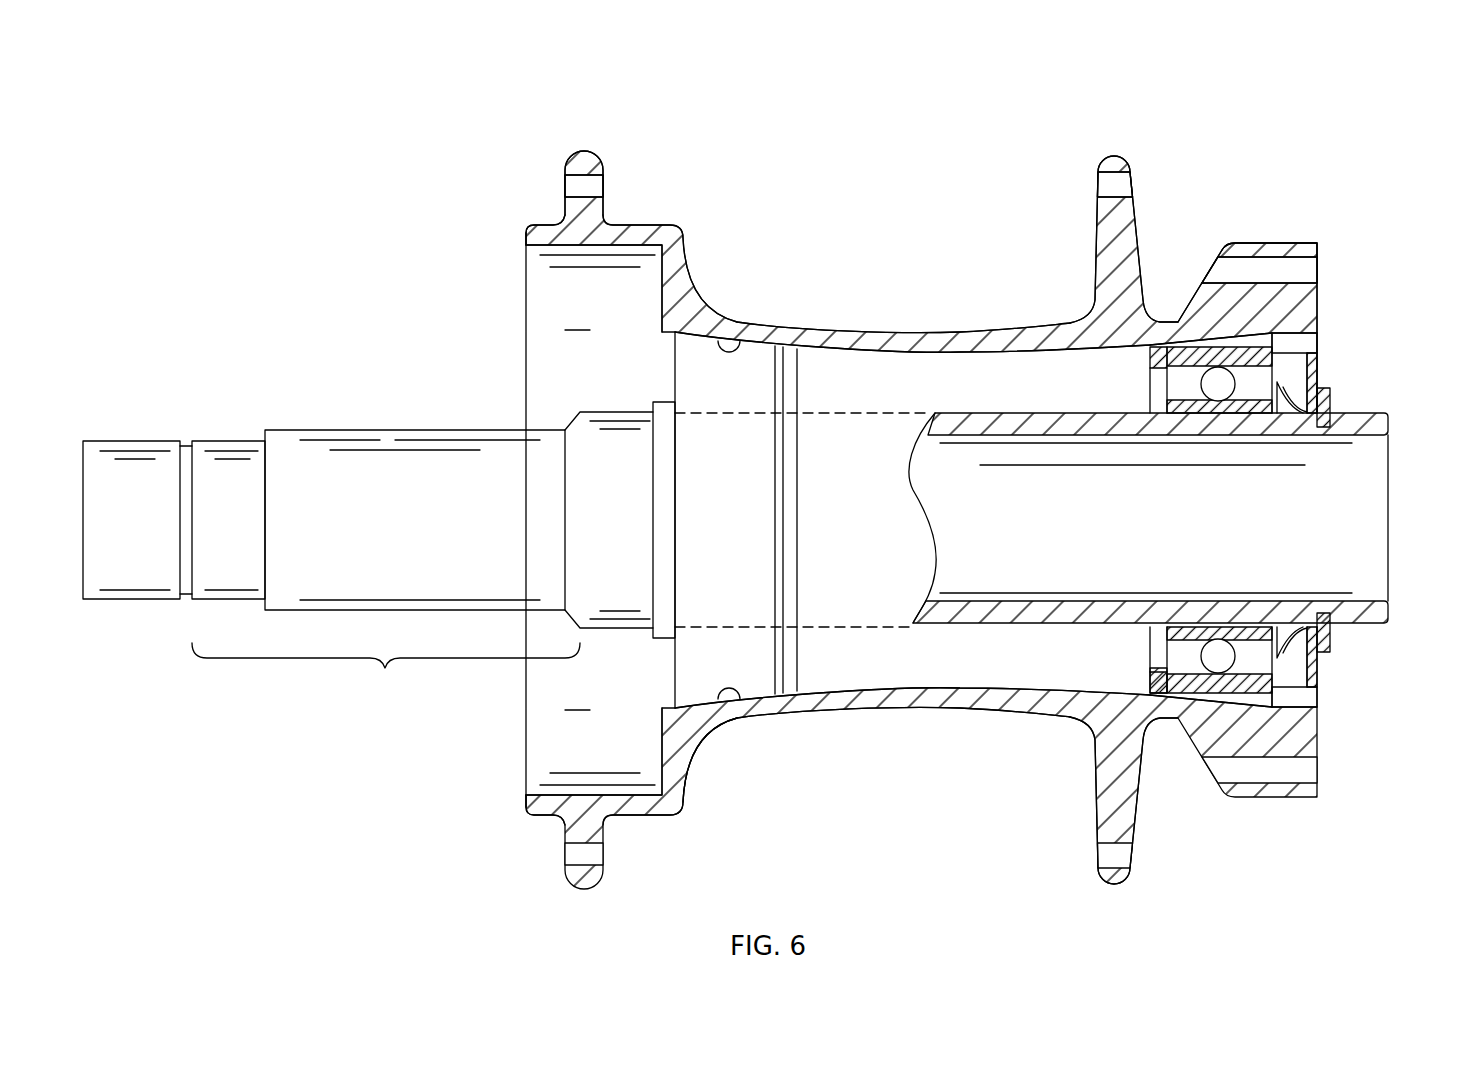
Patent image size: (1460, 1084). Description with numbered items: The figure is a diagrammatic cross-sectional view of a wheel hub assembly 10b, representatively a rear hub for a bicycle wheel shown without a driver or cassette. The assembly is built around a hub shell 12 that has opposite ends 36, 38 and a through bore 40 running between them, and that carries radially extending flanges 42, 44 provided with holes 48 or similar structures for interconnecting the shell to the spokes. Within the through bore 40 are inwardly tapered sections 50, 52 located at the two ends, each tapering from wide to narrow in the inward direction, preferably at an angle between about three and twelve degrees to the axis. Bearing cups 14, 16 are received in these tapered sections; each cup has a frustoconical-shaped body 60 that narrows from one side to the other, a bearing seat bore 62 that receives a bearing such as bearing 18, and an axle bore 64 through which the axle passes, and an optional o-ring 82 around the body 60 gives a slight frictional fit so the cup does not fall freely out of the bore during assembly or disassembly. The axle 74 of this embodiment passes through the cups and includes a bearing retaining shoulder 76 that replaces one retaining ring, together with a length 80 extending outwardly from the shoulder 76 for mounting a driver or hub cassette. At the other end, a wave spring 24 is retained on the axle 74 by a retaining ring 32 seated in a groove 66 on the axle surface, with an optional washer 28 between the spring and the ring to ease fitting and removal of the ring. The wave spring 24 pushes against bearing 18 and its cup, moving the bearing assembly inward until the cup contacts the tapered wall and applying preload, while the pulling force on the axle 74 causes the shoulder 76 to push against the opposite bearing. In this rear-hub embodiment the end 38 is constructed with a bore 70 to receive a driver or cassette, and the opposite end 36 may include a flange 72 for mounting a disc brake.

The wheel hub assembly 10b is at (767, 468).
The hub shell 12 is at (956, 327).
The bearing cup 14 is at (1275, 350).
The bearing cup 16 is at (803, 520).
The bearing 18 is at (1318, 705).
The wave spring 24 is at (1317, 400).
The washer 28 is at (1318, 676).
The retaining ring 32 is at (1350, 413).
The end 36 is at (1318, 306).
The end 38 is at (526, 236).
The through bore 40 is at (862, 363).
The flange 42 is at (1115, 150).
The flange 44 is at (584, 150).
The holes 48 is at (601, 177).
The tapered section 50 is at (1200, 340).
The tapered section 52 is at (746, 330).
The frustoconical-shaped body 60 is at (753, 700).
The bearing seat bore 62 is at (1197, 725).
The axle bore 64 is at (1150, 392).
The groove 66 is at (1333, 418).
The bore 70 is at (552, 347).
The flange 72 is at (1300, 243).
The axle 74 is at (978, 625).
The bearing retaining shoulder 76 is at (657, 638).
The length 80 is at (331, 566).
The o-ring 82 is at (780, 475).